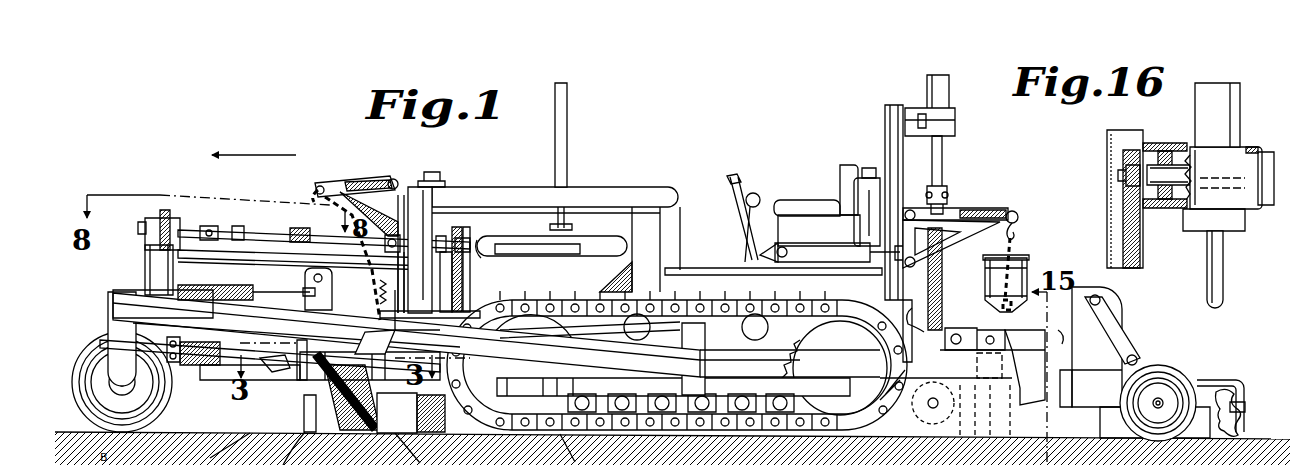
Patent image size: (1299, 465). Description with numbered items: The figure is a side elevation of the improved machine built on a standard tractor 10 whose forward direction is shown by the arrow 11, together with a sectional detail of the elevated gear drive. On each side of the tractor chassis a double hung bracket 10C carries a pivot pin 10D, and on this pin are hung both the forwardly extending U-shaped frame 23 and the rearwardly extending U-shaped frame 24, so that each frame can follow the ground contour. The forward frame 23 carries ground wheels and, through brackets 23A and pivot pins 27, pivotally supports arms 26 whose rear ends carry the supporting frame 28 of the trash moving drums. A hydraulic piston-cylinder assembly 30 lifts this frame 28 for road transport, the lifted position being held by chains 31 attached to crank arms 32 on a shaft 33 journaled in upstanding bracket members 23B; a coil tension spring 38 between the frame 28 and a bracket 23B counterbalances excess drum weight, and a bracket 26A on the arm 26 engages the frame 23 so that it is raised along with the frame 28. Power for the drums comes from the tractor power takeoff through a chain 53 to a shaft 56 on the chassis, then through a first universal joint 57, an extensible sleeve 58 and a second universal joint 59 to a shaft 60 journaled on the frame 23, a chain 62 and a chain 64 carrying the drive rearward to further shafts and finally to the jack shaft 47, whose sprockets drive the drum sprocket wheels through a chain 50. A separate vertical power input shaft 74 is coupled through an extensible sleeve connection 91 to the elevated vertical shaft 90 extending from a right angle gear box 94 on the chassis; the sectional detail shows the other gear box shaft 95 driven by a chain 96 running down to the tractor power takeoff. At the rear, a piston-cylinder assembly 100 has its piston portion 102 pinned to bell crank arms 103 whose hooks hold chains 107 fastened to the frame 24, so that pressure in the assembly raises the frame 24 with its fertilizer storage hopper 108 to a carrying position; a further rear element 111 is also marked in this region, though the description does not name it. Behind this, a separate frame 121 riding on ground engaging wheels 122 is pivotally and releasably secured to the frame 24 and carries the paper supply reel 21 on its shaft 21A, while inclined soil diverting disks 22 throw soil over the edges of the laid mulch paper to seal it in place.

In FIG. 1, the tractor 10 is at (626, 186).
In FIG. 1, the double hung bracket 10C is at (703, 322).
In FIG. 1, the pivot pin 10D is at (700, 358).
In FIG. 1, the arrow 11 is at (246, 155).
In FIG. 1, the paper supply reel 21 is at (1150, 368).
In FIG. 1, the shaft 21A is at (1132, 352).
In FIG. 1, the soil diverting disk 22 is at (1216, 386).
In FIG. 1, the U-shaped frame 23 is at (148, 322).
In FIG. 1, the bracket 23A is at (182, 368).
In FIG. 1, the upstanding bracket member 23B is at (405, 296).
In FIG. 1, the U-shaped frame 24 is at (856, 352).
In FIG. 1, the arm 26 is at (226, 380).
In FIG. 1, the bracket 26A is at (268, 343).
In FIG. 1, the pivot pin 27 is at (182, 345).
In FIG. 1, the supporting frame 28 is at (310, 396).
In FIG. 1, the piston-cylinder assembly 30 is at (215, 288).
In FIG. 1, the chain 31 is at (320, 195).
In FIG. 1, the crank arm 32 is at (368, 183).
In FIG. 1, the shaft 33 is at (400, 184).
In FIG. 1, the coil tension spring 38 is at (392, 324).
In FIG. 1, the shaft 47 is at (272, 370).
In FIG. 1, the chain 50 is at (308, 350).
In FIG. 1, the chain 53 is at (460, 304).
In FIG. 1, the shaft 56 is at (413, 282).
In FIG. 1, the first universal joint 57 is at (397, 242).
In FIG. 1, the extensible sleeve 58 is at (302, 236).
In FIG. 1, the second universal joint 59 is at (205, 233).
In FIG. 1, the shaft 60 is at (146, 230).
In FIG. 1, the chain 62 is at (166, 215).
In FIG. 1, the chain 64 is at (326, 289).
In FIG. 1, the power input shaft 74 is at (910, 311).
In FIG. 1, the vertical shaft 90 is at (942, 170).
In FIG. 16, the vertical shaft 90 is at (1207, 255).
In FIG. 1, the extensible sleeve connection 91 is at (930, 290).
In FIG. 16, the right angle gear box 94 is at (1172, 142).
In FIG. 16, the shaft 95 is at (1118, 176).
In FIG. 16, the chain 96 is at (1125, 207).
In FIG. 1, the piston-cylinder assembly 100 is at (831, 249).
In FIG. 1, the piston portion 102 is at (870, 268).
In FIG. 1, the bell crank arm 103 is at (980, 210).
In FIG. 1, the chain 107 is at (985, 288).
In FIG. 1, the fertilizer storage hopper 108 is at (988, 270).
In FIG. 1, the rear frame 111 is at (1062, 325).
In FIG. 1, the frame 121 is at (1091, 347).
In FIG. 1, the ground engaging wheel 122 is at (1182, 378).